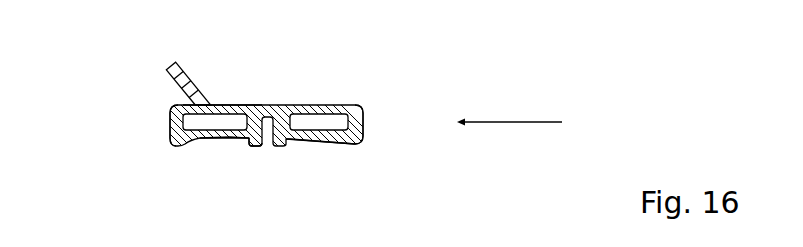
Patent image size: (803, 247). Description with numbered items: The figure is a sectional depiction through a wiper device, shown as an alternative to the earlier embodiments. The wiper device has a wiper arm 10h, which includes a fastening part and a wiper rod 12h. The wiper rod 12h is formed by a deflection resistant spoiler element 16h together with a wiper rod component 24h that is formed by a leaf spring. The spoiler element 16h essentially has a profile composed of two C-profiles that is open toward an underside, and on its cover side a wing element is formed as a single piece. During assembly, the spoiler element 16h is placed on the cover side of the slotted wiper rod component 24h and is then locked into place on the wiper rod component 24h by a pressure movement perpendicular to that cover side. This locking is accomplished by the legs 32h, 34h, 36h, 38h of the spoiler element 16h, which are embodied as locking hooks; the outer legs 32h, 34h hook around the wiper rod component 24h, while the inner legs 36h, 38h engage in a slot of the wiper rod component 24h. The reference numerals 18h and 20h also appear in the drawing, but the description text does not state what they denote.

The wiper arm 10h is at (158, 105).
The wiper rod 12h is at (266, 98).
The spoiler element 16h is at (158, 76).
The retaining flanges 18h is at (313, 154).
The insertion direction arrow 20h is at (508, 122).
The wiper rod component 24h is at (227, 105).
The leg 32h is at (177, 143).
The leg 34h is at (364, 143).
The leg 36h is at (318, 145).
The leg 38h is at (250, 138).